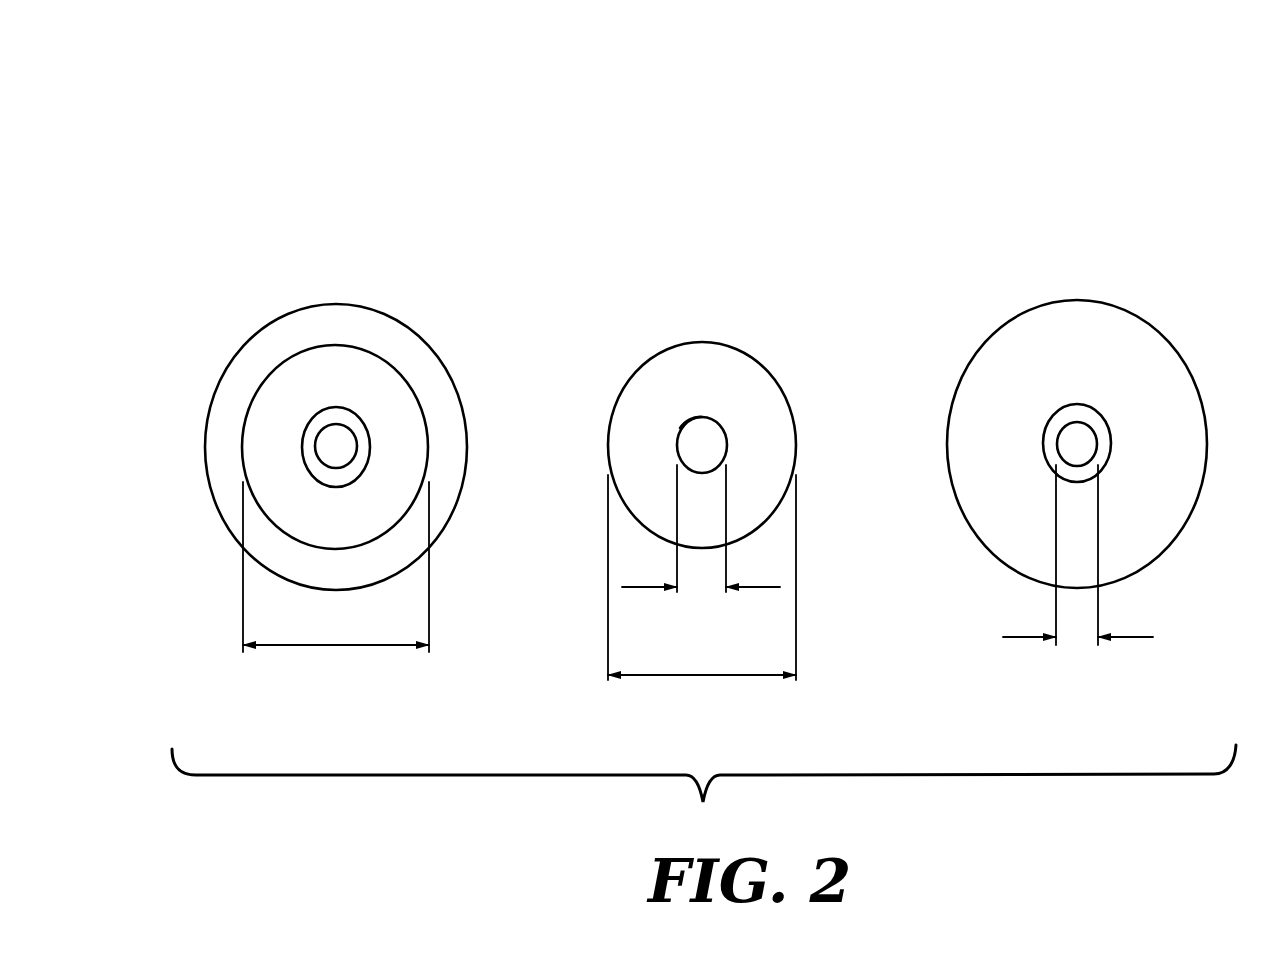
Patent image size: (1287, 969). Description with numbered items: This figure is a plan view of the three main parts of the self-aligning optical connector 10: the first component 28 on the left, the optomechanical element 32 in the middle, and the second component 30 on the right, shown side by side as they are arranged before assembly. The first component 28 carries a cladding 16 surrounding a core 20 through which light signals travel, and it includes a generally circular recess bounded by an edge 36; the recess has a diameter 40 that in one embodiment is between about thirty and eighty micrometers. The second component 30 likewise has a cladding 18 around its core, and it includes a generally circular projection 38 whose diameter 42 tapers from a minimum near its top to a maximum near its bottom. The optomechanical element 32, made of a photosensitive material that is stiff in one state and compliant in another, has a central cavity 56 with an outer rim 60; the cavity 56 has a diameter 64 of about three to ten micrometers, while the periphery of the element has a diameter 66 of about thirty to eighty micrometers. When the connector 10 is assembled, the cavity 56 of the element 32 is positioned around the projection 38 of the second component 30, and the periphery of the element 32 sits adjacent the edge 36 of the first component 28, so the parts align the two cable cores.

The self-aligning optical connector 10 is at (954, 108).
The cladding 16 is at (303, 440).
The cladding 18 is at (1113, 443).
The core 20 is at (325, 421).
The first component 28 is at (330, 303).
The second component 30 is at (1087, 300).
The optomechanical element 32 is at (723, 343).
The edge 36 is at (408, 385).
The projection 38 is at (1078, 427).
The diameter 40 is at (322, 647).
The diameter 42 is at (1140, 637).
The cavity 56 is at (723, 437).
The outer rim 60 is at (688, 417).
The diameter 64 is at (768, 587).
The diameter 66 is at (668, 675).